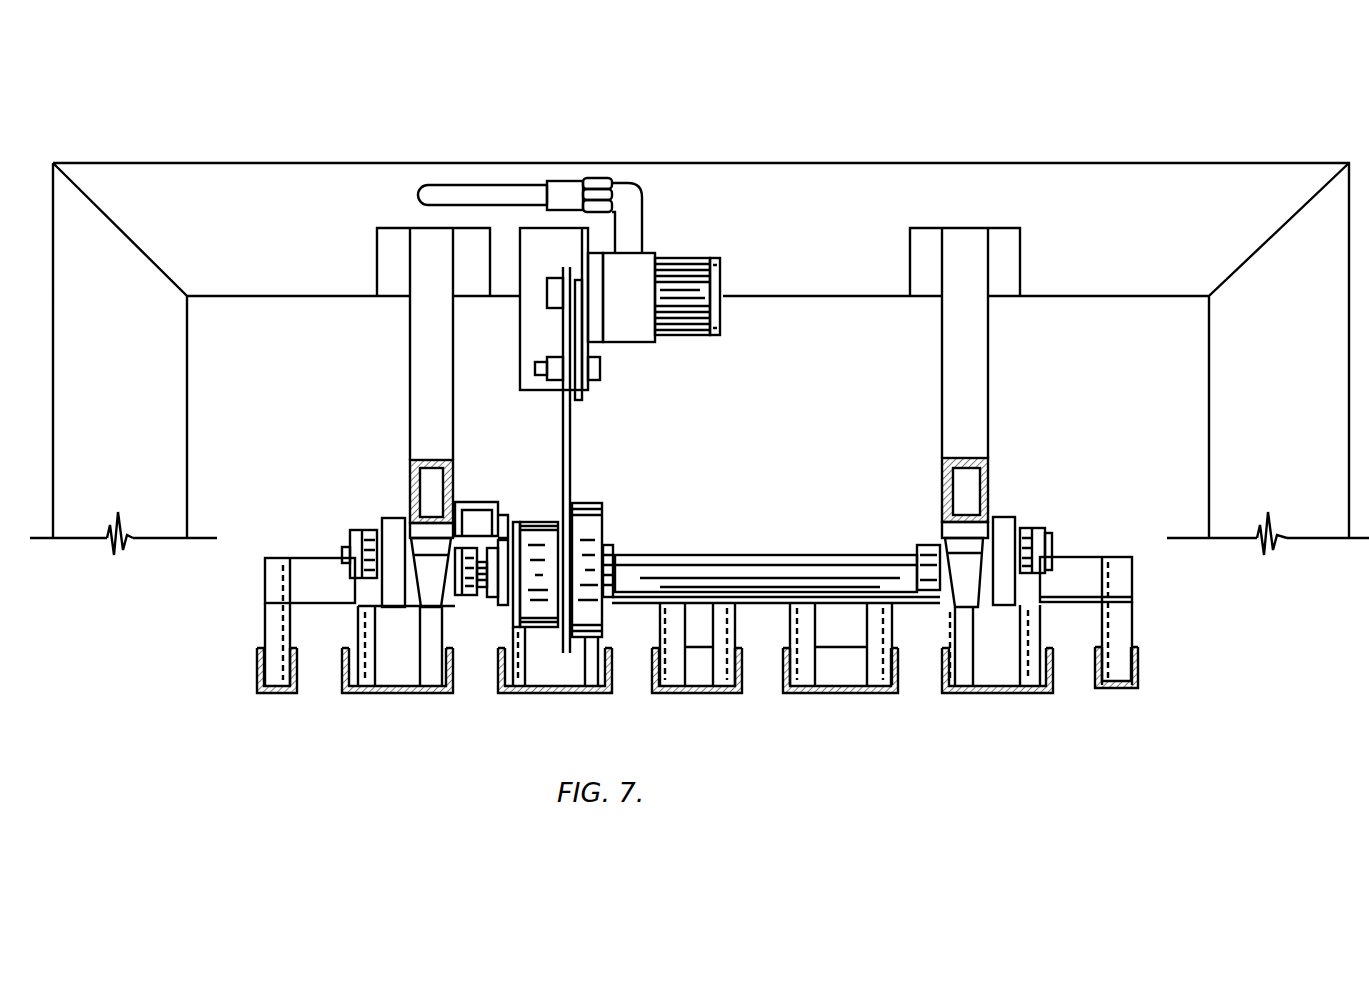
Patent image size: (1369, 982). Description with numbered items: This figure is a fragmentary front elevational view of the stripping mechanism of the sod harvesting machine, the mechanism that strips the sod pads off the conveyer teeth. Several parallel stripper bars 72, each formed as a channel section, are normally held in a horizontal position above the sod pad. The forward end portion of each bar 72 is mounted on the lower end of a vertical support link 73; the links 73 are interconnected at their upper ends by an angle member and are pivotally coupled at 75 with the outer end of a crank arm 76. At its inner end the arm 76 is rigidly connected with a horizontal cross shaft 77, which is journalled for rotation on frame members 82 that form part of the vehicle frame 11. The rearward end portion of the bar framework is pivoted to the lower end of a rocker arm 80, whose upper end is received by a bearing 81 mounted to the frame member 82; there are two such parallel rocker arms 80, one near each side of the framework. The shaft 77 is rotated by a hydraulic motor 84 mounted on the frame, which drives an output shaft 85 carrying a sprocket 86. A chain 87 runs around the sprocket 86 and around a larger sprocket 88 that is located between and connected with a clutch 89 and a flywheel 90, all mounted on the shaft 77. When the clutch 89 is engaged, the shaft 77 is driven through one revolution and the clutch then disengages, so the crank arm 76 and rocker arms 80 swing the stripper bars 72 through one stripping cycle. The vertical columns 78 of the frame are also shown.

The frame 11 is at (720, 163).
The stripper bars 72 is at (272, 693).
The vertical support link 73 is at (358, 623).
The pivotal coupling 75 is at (360, 547).
The crank arm 76 is at (382, 520).
The horizontal cross shaft 77 is at (762, 566).
The vertical column 78 is at (420, 340).
The rocker arm 80 is at (432, 594).
The bearing 81 is at (410, 527).
The frame members 82 is at (408, 450).
The hydraulic motor 84 is at (698, 325).
The output shaft 85 is at (580, 295).
The sprocket 86 is at (567, 275).
The chain 87 is at (585, 421).
The larger sprocket 88 is at (565, 488).
The clutch 89 is at (535, 528).
The flywheel 90 is at (595, 523).